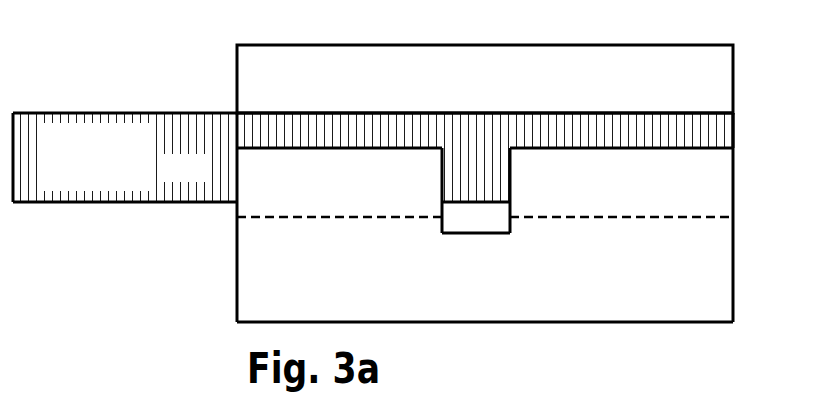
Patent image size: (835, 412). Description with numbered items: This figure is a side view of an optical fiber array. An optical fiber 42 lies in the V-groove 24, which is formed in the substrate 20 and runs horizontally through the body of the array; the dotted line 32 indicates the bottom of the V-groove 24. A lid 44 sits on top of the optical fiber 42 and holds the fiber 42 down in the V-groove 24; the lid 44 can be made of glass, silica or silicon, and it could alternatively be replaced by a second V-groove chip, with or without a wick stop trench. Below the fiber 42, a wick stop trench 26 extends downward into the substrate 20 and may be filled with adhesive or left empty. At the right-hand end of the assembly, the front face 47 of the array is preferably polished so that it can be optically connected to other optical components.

The substrate 20 is at (715, 301).
The V-groove 24 is at (256, 183).
The wick stop trench 26 is at (477, 218).
The dotted line 32 is at (323, 219).
The optical fiber 42 is at (201, 182).
The lid 44 is at (627, 98).
The front face 47 is at (733, 128).